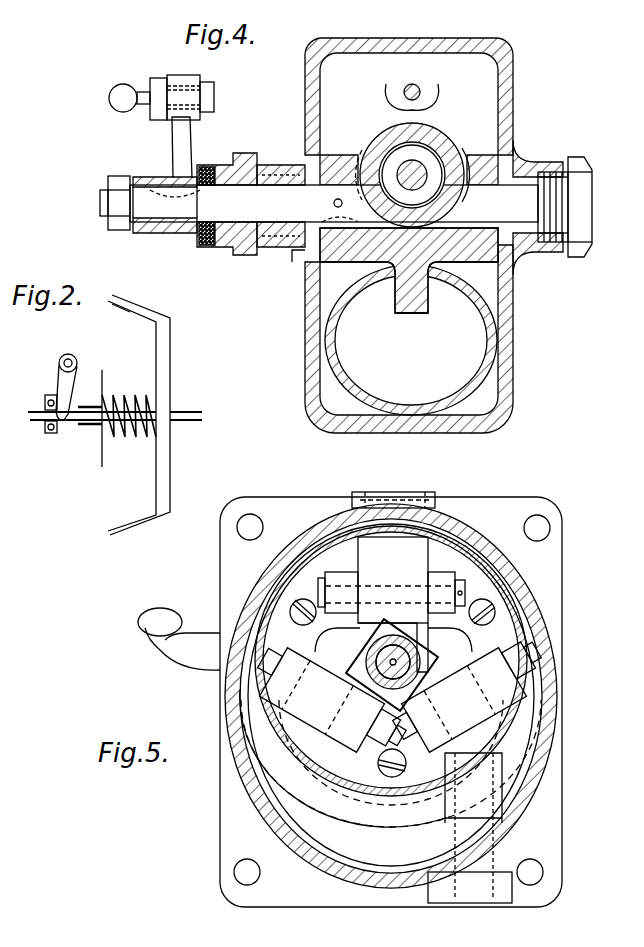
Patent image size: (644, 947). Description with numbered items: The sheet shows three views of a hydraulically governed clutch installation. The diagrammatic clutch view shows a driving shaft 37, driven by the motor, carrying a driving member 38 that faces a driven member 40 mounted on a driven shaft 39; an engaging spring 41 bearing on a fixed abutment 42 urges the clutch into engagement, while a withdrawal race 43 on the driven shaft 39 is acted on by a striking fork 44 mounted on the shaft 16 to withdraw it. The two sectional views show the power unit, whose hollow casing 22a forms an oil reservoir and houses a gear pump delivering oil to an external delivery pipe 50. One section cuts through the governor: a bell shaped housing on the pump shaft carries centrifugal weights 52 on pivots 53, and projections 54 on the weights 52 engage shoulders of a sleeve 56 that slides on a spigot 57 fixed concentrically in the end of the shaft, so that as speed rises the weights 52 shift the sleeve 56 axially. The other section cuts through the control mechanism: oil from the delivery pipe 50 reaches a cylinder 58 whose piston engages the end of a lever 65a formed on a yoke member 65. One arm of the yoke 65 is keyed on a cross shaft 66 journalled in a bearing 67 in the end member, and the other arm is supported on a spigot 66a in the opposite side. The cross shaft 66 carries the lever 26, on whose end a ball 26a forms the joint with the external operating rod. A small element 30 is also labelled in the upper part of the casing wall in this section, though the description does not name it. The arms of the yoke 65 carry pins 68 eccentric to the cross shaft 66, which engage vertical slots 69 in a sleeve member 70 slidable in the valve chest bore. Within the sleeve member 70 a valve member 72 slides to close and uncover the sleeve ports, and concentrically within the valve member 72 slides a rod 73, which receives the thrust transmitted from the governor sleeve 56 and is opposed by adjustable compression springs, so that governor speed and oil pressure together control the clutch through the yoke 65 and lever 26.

In FIG. 2, the shaft 16 is at (62, 358).
In FIG. 4, the hollow casing 22a is at (512, 322).
In FIG. 5, the hollow casing 22a is at (248, 822).
In FIG. 4, the lever 26 is at (182, 137).
In FIG. 4, the ball 26a is at (118, 103).
In FIG. 4, the boss 30 is at (425, 86).
In FIG. 2, the driving shaft 37 is at (186, 410).
In FIG. 2, the driving member 38 is at (158, 318).
In FIG. 2, the driven shaft 39 is at (29, 422).
In FIG. 2, the driven member 40 is at (132, 313).
In FIG. 2, the engaging spring 41 is at (122, 437).
In FIG. 2, the fixed abutment 42 is at (100, 462).
In FIG. 2, the withdrawal race 43 is at (52, 432).
In FIG. 2, the striking fork 44 is at (58, 387).
In FIG. 5, the delivery pipe 50 is at (192, 660).
In FIG. 5, the centrifugal weights 52 is at (400, 652).
In FIG. 5, the pivots 53 is at (468, 592).
In FIG. 5, the projections 54 is at (405, 650).
In FIG. 5, the sleeve 56 is at (398, 690).
In FIG. 5, the spigot 57 is at (418, 652).
In FIG. 4, the cylinder 58 is at (367, 400).
In FIG. 4, the yoke member 65 is at (418, 243).
In FIG. 4, the lever 65a is at (410, 305).
In FIG. 4, the cross shaft 66 is at (263, 197).
In FIG. 4, the spigot 66a is at (518, 193).
In FIG. 4, the bearing 67 is at (242, 158).
In FIG. 4, the pins 68 is at (362, 187).
In FIG. 4, the vertical slots 69 is at (372, 200).
In FIG. 4, the sleeve member 70 is at (432, 218).
In FIG. 4, the valve member 72 is at (330, 222).
In FIG. 4, the rod 73 is at (412, 177).